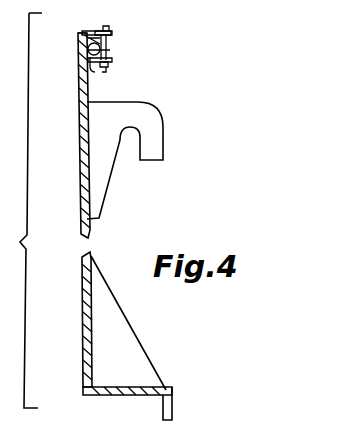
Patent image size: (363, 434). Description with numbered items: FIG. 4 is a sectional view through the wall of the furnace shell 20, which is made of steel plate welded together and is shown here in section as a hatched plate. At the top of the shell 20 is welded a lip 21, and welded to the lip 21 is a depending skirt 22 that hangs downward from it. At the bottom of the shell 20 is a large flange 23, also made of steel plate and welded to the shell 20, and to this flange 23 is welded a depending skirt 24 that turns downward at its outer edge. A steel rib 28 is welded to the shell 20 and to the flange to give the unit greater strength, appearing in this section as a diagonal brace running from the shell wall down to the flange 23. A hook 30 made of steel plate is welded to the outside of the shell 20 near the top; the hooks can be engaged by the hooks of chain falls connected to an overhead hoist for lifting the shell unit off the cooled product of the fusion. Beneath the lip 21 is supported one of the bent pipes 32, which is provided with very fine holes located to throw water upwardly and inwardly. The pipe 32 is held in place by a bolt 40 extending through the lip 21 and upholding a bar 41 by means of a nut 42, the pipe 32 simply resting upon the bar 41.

The furnace shell 20 is at (78, 158).
The lip 21 is at (107, 26).
The depending skirt 22 is at (112, 50).
The flange 23 is at (122, 393).
The depending skirt 24 is at (172, 417).
The steel rib 28 is at (130, 348).
The hook 30 is at (148, 129).
The bent pipe 32 is at (78, 48).
The bolt 40 is at (80, 32).
The bar 41 is at (90, 72).
The nut 42 is at (108, 65).